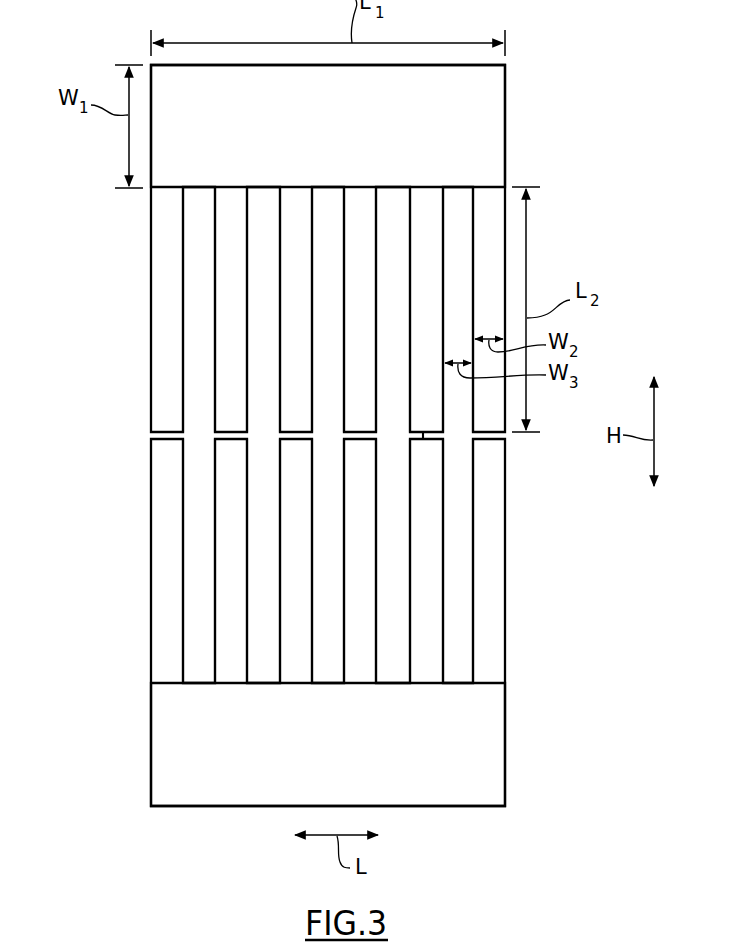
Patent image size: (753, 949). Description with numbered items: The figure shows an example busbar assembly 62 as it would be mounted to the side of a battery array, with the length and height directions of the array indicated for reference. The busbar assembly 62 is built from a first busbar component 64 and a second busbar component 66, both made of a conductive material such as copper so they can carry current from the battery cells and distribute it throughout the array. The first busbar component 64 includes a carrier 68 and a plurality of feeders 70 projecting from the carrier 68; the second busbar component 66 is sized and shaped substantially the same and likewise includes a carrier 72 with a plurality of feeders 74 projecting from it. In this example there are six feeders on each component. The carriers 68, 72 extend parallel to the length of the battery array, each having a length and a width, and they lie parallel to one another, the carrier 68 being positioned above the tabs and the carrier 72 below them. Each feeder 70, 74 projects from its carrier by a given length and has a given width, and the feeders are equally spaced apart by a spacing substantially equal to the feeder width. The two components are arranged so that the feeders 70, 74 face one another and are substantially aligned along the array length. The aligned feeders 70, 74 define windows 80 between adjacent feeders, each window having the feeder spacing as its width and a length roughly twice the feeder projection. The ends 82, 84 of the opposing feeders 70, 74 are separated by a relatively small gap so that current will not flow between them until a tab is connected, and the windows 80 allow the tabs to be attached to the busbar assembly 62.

The busbar assembly 62 is at (404, 425).
The first busbar component 64 is at (508, 145).
The second busbar component 66 is at (508, 740).
The carrier 68 is at (257, 91).
The feeders 70 is at (428, 306).
The carrier 72 is at (412, 782).
The feeders 74 is at (422, 562).
The windows 80 is at (390, 462).
The end 82 is at (408, 432).
The end 84 is at (423, 439).